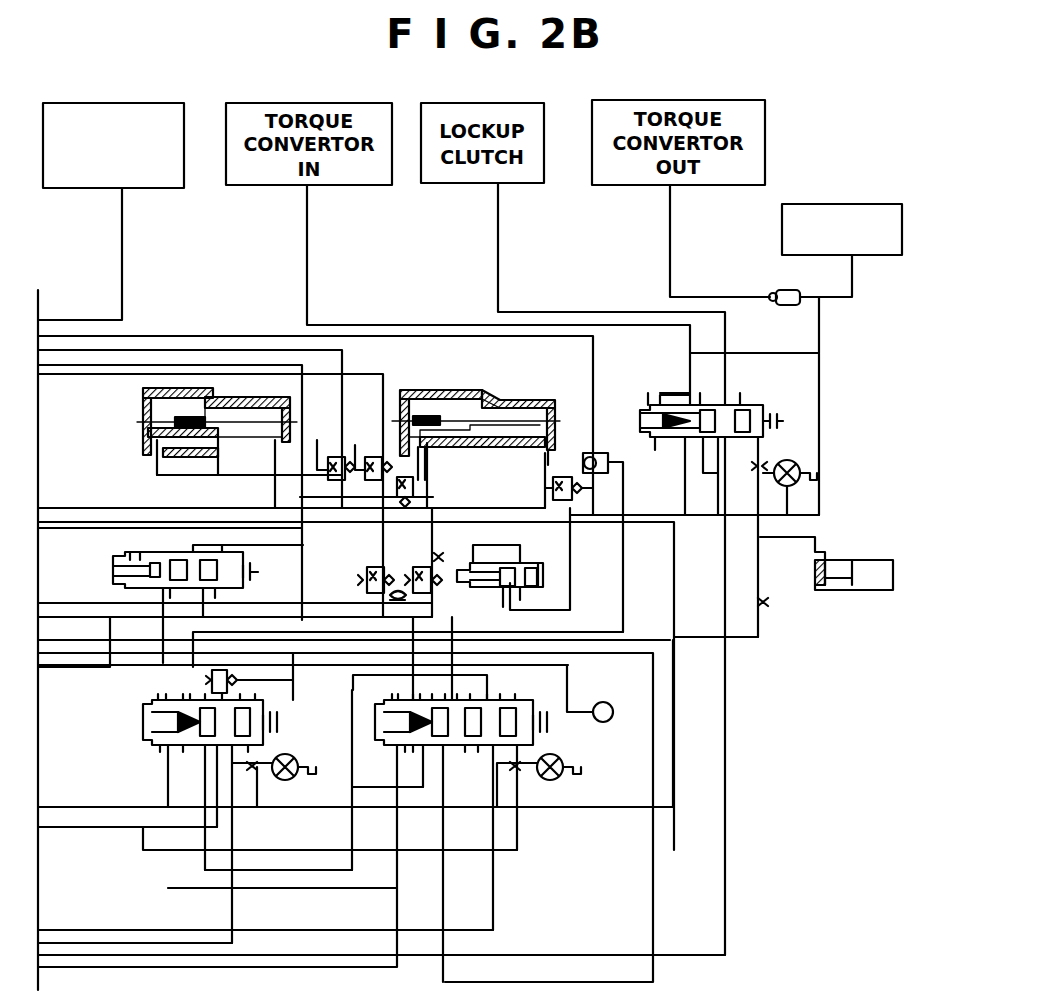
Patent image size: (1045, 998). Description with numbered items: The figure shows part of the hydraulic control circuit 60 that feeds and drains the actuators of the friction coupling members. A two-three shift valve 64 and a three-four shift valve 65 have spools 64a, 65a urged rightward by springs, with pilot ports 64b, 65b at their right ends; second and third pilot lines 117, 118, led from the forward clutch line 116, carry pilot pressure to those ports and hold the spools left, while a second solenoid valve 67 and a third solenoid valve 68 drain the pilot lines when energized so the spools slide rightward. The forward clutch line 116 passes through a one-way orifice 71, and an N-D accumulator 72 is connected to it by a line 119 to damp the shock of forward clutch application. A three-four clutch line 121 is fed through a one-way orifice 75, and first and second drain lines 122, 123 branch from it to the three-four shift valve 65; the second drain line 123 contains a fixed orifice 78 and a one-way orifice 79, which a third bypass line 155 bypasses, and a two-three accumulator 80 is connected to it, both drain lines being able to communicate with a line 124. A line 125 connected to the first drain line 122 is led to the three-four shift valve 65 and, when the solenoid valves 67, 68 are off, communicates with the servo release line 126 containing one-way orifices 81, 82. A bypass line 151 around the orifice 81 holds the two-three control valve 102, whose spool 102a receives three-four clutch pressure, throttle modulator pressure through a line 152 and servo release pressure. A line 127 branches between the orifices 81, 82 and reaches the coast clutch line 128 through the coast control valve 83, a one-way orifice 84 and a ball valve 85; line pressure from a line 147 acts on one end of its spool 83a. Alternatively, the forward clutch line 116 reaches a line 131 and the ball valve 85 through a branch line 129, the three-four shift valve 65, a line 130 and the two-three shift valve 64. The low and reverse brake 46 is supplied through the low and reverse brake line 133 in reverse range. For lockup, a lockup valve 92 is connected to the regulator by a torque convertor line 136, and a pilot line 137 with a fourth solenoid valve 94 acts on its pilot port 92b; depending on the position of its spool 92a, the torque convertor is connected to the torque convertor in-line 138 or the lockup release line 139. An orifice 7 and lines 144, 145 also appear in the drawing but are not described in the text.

The low and reverse brake 46 is at (165, 103).
The hydraulic control circuit 60 is at (815, 150).
The low and reverse brake line 133 is at (122, 268).
The torque convertor in-line 138 is at (307, 268).
The lockup release line 139 is at (498, 268).
The coast clutch line 128 is at (593, 375).
The N-D accumulator 72 is at (140, 420).
The line 119 is at (213, 477).
The third bypass line 155 is at (97, 527).
The 2-3 accumulator 80 is at (497, 400).
The second drain line 123 is at (427, 500).
The one-way orifice 71 is at (330, 457).
The one-way orifice 82 is at (370, 457).
The check valve 7 is at (404, 478).
The one-way orifice 84 is at (560, 477).
The ball valve 85 is at (603, 455).
The lockup valve 92 is at (772, 427).
The spool 92a is at (748, 408).
The pilot port 92b is at (763, 459).
The fourth solenoid valve 94 is at (790, 488).
The 2-3 control valve 102 is at (243, 578).
The spool 102a is at (147, 545).
The bypass line 151 is at (235, 588).
The line 131 is at (250, 630).
The line 152 is at (155, 640).
The 3-4 clutch line 121 is at (150, 676).
The one-way orifice 75 is at (237, 684).
The first drain line 122 is at (285, 676).
The one-way orifice 81 is at (366, 578).
The fixed orifice 78 is at (432, 556).
The one-way orifice 79 is at (403, 598).
The servo release line 126 is at (442, 630).
The coast control valve 83 is at (545, 575).
The spool 83a is at (540, 562).
The line 147 is at (537, 550).
The line 127 is at (471, 538).
The torque convertor line 136 is at (722, 548).
The pilot line 137 is at (760, 572).
The line 125 is at (613, 655).
The line 130 is at (353, 690).
The 2-3 shift valve 64 is at (283, 727).
The spool 64a is at (170, 690).
The pilot port 64b is at (268, 744).
The second solenoid valve 67 is at (274, 780).
The 3-4 shift valve 65 is at (543, 716).
The spool 65a is at (510, 687).
The pilot port 65b is at (525, 744).
The third solenoid valve 68 is at (539, 780).
The line 124 is at (385, 780).
The branch line 129 is at (462, 800).
The forward clutch line 116 is at (115, 807).
The second pilot line 117 is at (257, 830).
The third pilot line 118 is at (517, 830).
The passage 144 is at (232, 912).
The passage 145 is at (493, 912).